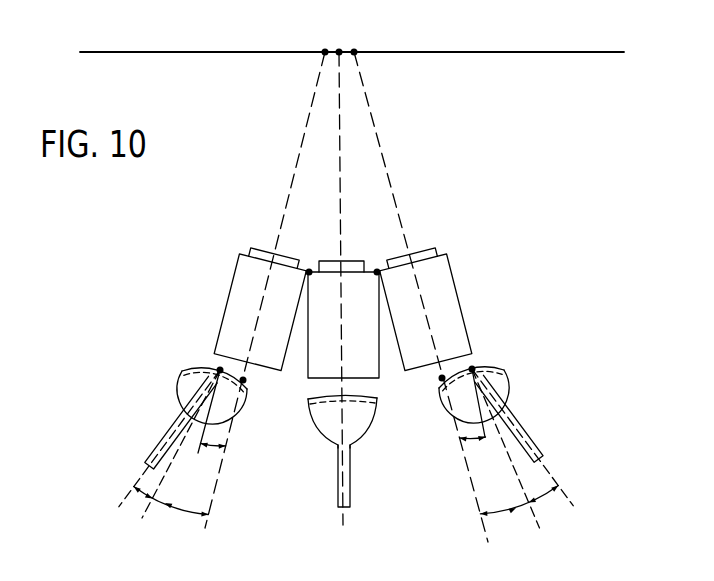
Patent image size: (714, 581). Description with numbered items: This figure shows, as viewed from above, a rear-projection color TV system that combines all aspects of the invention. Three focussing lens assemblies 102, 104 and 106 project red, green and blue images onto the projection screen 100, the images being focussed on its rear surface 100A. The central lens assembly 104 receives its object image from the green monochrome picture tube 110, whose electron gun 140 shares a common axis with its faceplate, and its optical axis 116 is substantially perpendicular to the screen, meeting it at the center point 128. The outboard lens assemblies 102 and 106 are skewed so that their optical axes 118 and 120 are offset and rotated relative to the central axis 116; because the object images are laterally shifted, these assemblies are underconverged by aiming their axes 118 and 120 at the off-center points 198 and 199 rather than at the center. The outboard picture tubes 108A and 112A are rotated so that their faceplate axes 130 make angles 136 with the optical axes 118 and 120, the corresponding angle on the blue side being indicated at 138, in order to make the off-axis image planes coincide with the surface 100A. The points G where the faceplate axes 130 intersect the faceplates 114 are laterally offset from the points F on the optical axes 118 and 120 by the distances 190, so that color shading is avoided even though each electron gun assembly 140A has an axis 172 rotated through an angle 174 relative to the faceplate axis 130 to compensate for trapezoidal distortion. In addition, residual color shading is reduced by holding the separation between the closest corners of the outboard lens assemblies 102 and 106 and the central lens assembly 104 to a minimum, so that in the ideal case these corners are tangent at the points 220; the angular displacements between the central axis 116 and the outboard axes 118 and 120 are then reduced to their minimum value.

The projection screen 100 is at (180, 49).
The rear surface of the projection screen 100A is at (226, 53).
The center point of the screen 128 is at (341, 49).
The off-center point 198 is at (325, 49).
The off-center point 199 is at (356, 48).
The optical axis of the red lens assembly 118 is at (299, 158).
The optical axis of the blue lens assembly 120 is at (372, 113).
The optical axis of the central lens assembly 116 is at (341, 176).
The focussing lens assembly 102 is at (230, 283).
The focussing lens assembly 104 is at (304, 378).
The focussing lens assembly 106 is at (453, 290).
The tangent points 220 is at (391, 232).
The faceplate 114 is at (197, 367).
The outboard picture tube 108A is at (163, 420).
The outboard picture tube 112A is at (521, 388).
The electron gun assembly 140A is at (333, 419).
The electron gun axis 172 is at (121, 503).
The faceplate axis 130 is at (151, 505).
The angle between faceplate axis and optical axis 136 is at (185, 506).
The right beam angle 138 is at (494, 514).
The angle between electron gun axis and faceplate axis 174 is at (138, 500).
The lateral offset distance 190 is at (213, 450).
The green monochrome picture tube 110 is at (359, 446).
The electron gun 140 is at (351, 487).
The faceplate axis intersection point G is at (218, 367).
The optical axis point F is at (245, 379).